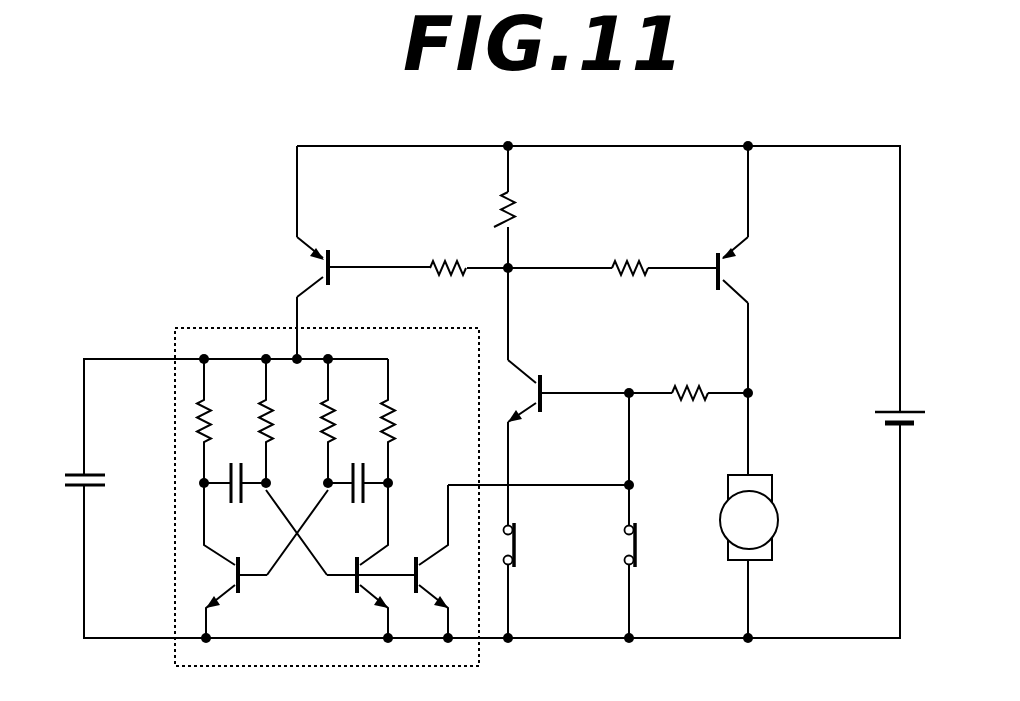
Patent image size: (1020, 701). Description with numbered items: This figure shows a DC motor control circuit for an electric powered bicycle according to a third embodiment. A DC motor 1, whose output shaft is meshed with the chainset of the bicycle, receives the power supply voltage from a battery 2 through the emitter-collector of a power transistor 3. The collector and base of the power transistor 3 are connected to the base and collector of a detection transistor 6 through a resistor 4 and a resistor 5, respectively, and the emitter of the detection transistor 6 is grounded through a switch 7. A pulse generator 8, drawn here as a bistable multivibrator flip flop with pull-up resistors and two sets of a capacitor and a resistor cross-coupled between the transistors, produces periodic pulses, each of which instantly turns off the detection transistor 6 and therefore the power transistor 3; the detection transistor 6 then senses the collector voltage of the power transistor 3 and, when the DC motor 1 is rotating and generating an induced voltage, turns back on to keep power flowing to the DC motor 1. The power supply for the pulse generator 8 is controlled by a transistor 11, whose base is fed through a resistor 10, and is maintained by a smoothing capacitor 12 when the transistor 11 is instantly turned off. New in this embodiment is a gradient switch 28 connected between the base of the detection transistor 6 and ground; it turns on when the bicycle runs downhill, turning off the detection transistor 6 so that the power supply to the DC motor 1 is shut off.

The DC motor 1 is at (780, 518).
The battery 2 is at (885, 412).
The power transistor 3 is at (740, 296).
The resistor 4 is at (688, 385).
The resistor 5 is at (638, 260).
The detection transistor 6 is at (520, 373).
The switch 7 is at (519, 548).
The pulse generator 8 is at (175, 343).
The resistor 10 is at (445, 260).
The transistor 11 is at (305, 290).
The smoothing capacitor 12 is at (88, 472).
The gradient switch 28 is at (640, 548).